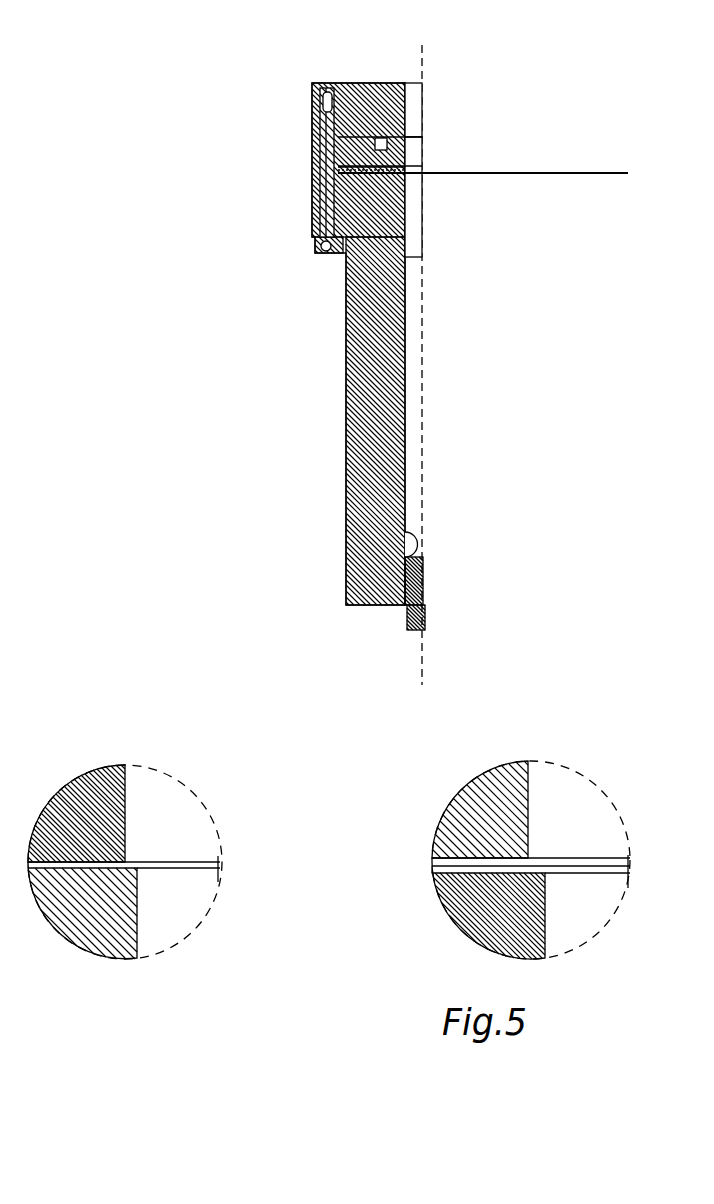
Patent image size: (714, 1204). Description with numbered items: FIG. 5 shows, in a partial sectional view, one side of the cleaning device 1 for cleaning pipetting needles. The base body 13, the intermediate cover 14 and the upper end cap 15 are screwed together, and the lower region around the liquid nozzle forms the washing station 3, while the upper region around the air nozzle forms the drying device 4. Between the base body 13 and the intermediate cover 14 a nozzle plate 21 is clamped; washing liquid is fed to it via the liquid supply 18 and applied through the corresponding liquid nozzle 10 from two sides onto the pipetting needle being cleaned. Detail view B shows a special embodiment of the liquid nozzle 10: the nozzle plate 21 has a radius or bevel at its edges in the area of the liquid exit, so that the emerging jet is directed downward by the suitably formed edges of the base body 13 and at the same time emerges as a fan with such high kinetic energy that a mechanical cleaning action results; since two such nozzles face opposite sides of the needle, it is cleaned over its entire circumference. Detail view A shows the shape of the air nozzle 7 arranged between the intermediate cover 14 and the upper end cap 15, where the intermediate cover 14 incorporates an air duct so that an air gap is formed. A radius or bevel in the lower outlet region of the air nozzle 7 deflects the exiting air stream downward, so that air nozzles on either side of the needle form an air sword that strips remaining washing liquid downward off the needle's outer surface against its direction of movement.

The cleaning device 1 is at (297, 146).
The washing station 3 is at (437, 189).
The drying device 4 is at (437, 142).
The air nozzle 7 is at (421, 136).
The liquid nozzle 10 is at (413, 168).
The base body 13 is at (377, 346).
The intermediate cover 14 is at (355, 153).
The upper end cap 15 is at (360, 108).
The liquid supply 18 is at (378, 178).
The nozzle plate 21 is at (501, 174).